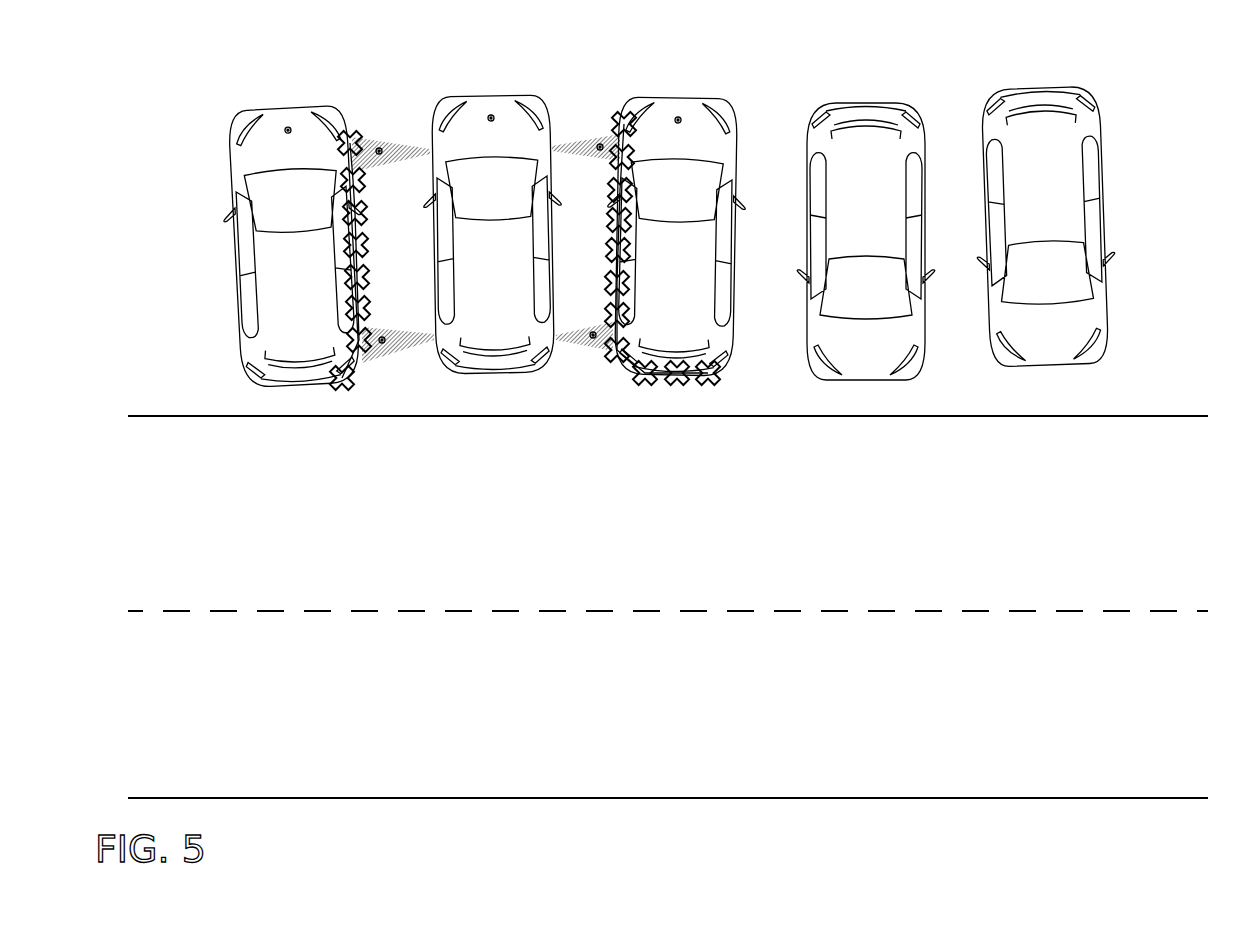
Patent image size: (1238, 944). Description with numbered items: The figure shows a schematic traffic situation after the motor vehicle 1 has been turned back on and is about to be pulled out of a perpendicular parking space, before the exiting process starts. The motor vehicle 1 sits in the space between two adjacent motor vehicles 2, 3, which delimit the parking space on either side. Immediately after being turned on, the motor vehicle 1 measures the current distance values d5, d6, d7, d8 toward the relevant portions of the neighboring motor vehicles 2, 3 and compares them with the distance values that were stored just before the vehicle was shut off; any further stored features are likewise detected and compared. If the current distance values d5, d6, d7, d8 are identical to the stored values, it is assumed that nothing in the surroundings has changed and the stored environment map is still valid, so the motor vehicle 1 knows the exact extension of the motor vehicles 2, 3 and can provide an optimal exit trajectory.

The motor vehicle 1 is at (493, 115).
The adjacent motor vehicle 2 is at (291, 124).
The adjacent motor vehicle 3 is at (684, 115).
The current distance value d5 is at (380, 148).
The current distance value d6 is at (383, 343).
The current distance value d7 is at (600, 144).
The current distance value d8 is at (593, 338).